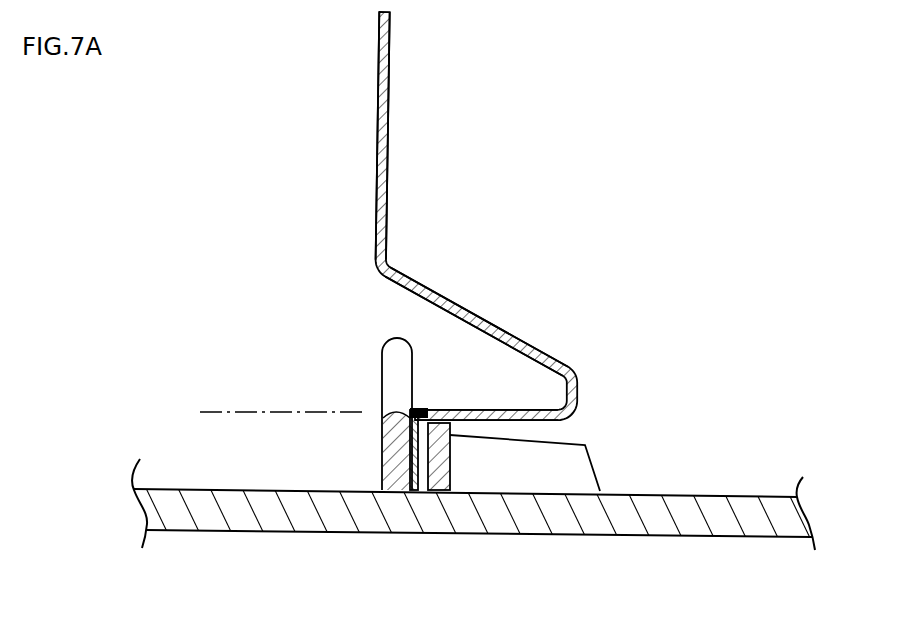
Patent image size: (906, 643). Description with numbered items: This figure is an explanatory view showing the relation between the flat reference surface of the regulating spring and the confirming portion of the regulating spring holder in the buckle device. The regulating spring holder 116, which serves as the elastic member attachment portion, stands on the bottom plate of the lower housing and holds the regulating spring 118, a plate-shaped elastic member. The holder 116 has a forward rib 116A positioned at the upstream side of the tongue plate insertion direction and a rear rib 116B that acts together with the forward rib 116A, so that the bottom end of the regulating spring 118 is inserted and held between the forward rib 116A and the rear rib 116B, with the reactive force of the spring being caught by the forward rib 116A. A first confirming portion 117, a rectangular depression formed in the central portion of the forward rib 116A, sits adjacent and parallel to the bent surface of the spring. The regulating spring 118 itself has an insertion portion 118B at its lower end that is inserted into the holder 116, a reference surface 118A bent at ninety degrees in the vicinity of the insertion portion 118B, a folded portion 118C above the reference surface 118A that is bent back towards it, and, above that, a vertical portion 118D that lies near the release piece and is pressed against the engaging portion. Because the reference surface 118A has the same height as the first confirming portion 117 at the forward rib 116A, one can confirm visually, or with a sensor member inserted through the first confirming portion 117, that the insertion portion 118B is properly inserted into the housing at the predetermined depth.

The regulating spring holder 116 is at (365, 361).
The forward rib 116A is at (382, 452).
The rear rib 116B is at (451, 460).
The first confirming portion 117 is at (383, 399).
The regulating spring 118 is at (386, 141).
The reference surface 118A is at (465, 410).
The insertion portion 118B is at (419, 445).
The folded portion 118C is at (480, 316).
The vertical portion 118D is at (384, 188).